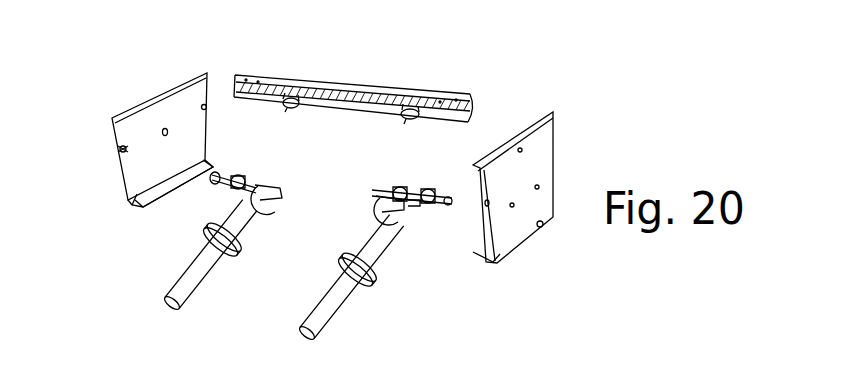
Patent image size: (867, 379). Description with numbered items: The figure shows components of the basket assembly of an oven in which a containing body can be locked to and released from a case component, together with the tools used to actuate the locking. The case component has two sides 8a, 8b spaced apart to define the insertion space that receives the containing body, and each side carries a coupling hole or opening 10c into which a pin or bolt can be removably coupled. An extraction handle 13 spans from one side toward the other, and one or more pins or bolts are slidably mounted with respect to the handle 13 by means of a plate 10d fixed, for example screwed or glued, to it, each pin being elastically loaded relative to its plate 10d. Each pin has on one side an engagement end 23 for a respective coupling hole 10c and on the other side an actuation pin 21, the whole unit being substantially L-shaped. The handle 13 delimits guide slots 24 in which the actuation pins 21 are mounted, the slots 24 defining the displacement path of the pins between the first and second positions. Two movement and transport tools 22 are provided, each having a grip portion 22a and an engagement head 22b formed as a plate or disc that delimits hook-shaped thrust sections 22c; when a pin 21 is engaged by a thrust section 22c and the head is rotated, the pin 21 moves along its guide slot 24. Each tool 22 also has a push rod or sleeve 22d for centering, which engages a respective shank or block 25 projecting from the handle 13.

The side of the case component 8a is at (520, 225).
The side of the case component 8b is at (147, 102).
The coupling hole or opening 10c is at (120, 149).
The plate 10d is at (428, 188).
The extraction handle 13 is at (307, 80).
The actuation pin 21 is at (387, 197).
The movement and transport tool 22 is at (382, 283).
The grip portion 22a is at (218, 273).
The engagement head 22b is at (408, 228).
The thrust section 22c is at (425, 191).
The push rod or sleeve for centering or positioning 22d is at (274, 191).
The engagement end 23 is at (197, 184).
The guide slot 24 is at (408, 110).
The shank or block 25 is at (290, 105).